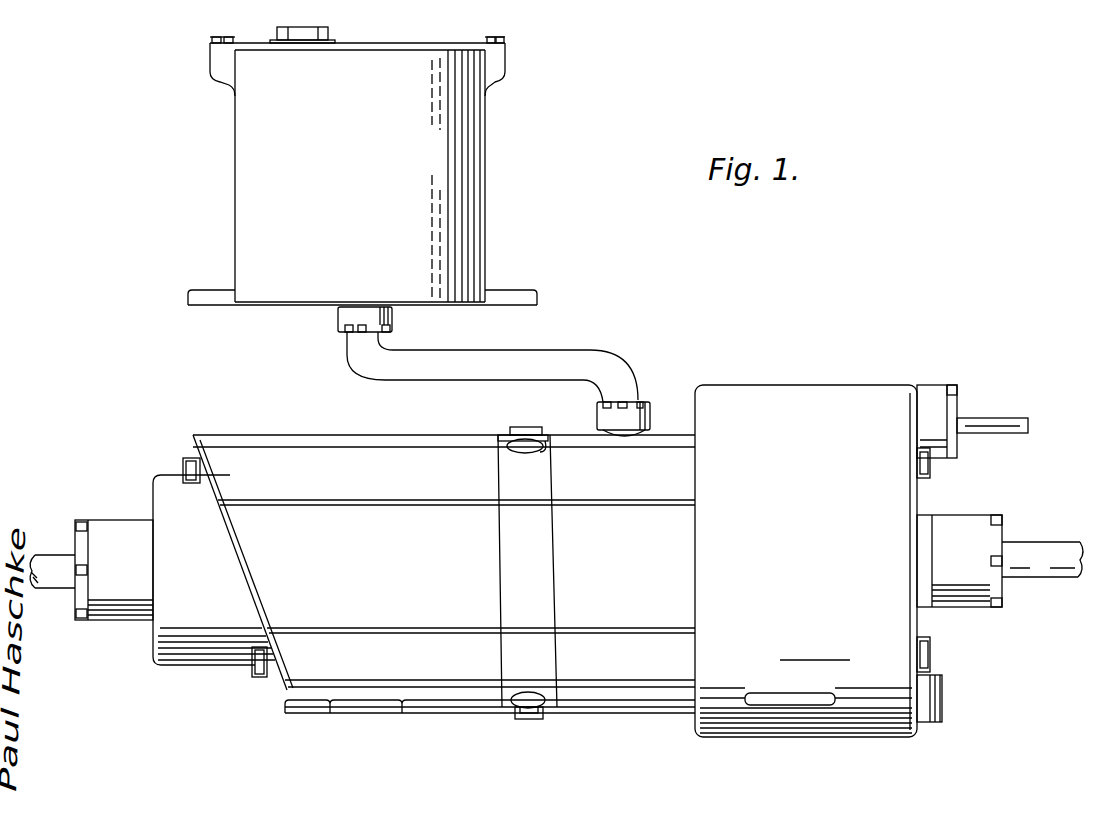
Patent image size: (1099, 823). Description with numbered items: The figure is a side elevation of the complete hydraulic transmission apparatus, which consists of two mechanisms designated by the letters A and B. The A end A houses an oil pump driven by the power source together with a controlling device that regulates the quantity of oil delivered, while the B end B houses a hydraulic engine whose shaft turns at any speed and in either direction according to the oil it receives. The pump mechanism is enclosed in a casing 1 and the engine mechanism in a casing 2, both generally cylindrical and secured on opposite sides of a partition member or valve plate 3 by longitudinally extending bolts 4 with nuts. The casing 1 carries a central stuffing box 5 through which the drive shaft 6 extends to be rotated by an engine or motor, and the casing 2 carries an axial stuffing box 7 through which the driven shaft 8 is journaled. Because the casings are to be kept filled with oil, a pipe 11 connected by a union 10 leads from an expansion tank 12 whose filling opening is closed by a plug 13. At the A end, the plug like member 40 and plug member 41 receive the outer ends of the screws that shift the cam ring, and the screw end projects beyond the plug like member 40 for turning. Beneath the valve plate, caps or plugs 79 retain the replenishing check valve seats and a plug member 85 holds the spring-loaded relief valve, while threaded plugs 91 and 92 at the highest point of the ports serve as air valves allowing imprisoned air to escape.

The casing 1 is at (806, 550).
The A end A is at (772, 396).
The B end B is at (444, 560).
The casing 2 is at (375, 446).
The partition member or valve plate 3 is at (551, 442).
The bolts 4 is at (182, 466).
The stuffing box 5 is at (965, 525).
The drive shaft 6 is at (1032, 555).
The stuffing box 7 is at (106, 526).
The driven shaft 8 is at (44, 562).
The union 10 is at (648, 405).
The pipe 11 is at (515, 360).
The expansion tank 12 is at (468, 125).
The plug 13 is at (316, 28).
The plug like member 40 is at (958, 395).
The plug member 41 is at (948, 690).
The caps or plugs 79 is at (530, 720).
The plug member 85 is at (508, 714).
The threaded plug 91 is at (517, 428).
The threaded plug 92 is at (537, 428).